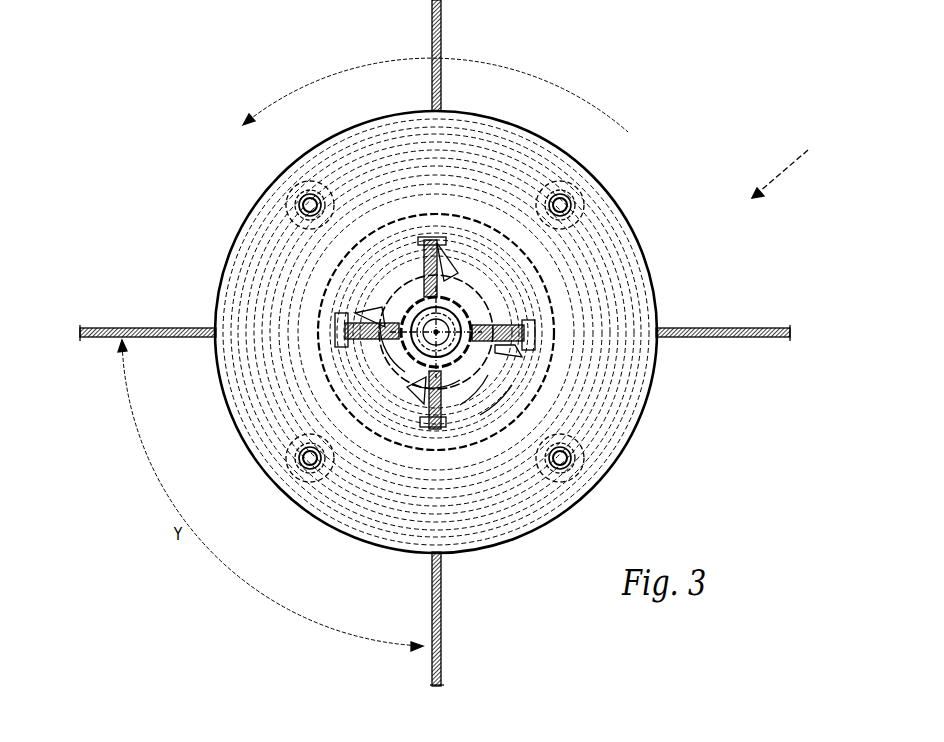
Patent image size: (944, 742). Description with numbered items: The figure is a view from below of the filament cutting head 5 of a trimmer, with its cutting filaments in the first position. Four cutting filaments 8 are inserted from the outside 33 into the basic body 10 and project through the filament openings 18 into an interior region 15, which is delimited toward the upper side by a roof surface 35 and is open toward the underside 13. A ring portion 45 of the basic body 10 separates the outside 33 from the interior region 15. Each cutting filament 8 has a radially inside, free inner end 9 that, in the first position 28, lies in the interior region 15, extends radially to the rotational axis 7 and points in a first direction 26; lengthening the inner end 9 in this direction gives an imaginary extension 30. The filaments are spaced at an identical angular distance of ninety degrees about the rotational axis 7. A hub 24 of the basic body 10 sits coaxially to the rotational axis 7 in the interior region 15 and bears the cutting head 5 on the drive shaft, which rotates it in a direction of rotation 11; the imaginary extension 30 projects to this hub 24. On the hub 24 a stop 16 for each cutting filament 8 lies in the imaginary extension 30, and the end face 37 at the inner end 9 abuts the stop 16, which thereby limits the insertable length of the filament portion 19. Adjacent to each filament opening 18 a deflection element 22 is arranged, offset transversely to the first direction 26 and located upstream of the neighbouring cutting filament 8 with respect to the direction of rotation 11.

The filament cutting head 5 is at (786, 162).
The rotational axis 7 is at (553, 212).
The cutting filament 8 is at (452, 290).
The inner end 9 is at (505, 330).
The basic body 10 is at (255, 212).
The direction of rotation 11 is at (435, 87).
The underside 13 is at (300, 368).
The interior region 15 is at (488, 375).
The stop 16 is at (613, 207).
The filament opening 18 is at (540, 322).
The filament portion 19 is at (405, 372).
The deflection element 22 is at (562, 466).
The hub 24 is at (425, 305).
The first direction 26 is at (460, 380).
The first position 28 is at (515, 345).
The imaginary extension 30 is at (512, 385).
The outside 33 is at (647, 417).
The roof surface 35 is at (467, 247).
The end face 37 is at (427, 312).
The ring portion 45 is at (335, 350).